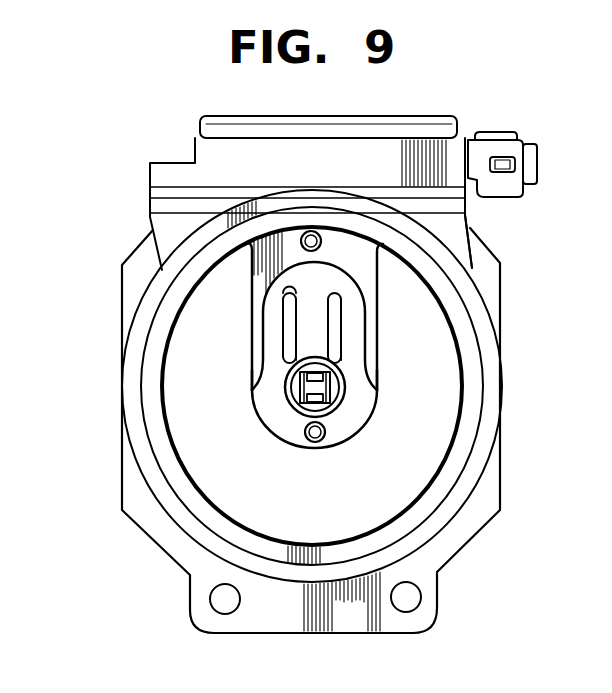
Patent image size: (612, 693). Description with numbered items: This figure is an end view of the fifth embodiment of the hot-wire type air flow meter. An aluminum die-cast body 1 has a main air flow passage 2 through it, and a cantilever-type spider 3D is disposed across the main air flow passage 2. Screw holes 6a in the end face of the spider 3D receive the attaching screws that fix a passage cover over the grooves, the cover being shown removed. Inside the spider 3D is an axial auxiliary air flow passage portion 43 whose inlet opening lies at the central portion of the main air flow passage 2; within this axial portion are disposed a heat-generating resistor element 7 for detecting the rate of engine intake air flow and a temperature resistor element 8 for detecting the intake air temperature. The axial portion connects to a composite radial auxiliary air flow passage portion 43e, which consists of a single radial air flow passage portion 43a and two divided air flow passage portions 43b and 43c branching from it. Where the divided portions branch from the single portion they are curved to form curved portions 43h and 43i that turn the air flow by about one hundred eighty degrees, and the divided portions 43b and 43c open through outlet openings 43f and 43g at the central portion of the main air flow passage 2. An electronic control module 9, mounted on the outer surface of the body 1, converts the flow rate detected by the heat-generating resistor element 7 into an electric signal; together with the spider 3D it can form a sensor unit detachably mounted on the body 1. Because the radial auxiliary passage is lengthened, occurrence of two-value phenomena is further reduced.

The body 1 is at (443, 553).
The main air flow passage 2 is at (410, 471).
The spider 3D is at (253, 340).
The screw holes 6a is at (331, 283).
The heat-generating resistor element 7 is at (313, 412).
The temperature resistor element 8 is at (320, 366).
The electronic control module 9 is at (213, 152).
The axial auxiliary air flow passage portion 43 is at (275, 432).
The radial air flow passage portion 43a is at (308, 333).
The divided air flow passage portion 43b is at (273, 317).
The divided air flow passage portion 43c is at (352, 308).
The composite radial auxiliary air flow passage portion 43e is at (350, 320).
The outlet opening 43f is at (293, 360).
The outlet opening 43g is at (362, 385).
The curved portion 43h is at (288, 293).
The curved portion 43i is at (467, 231).